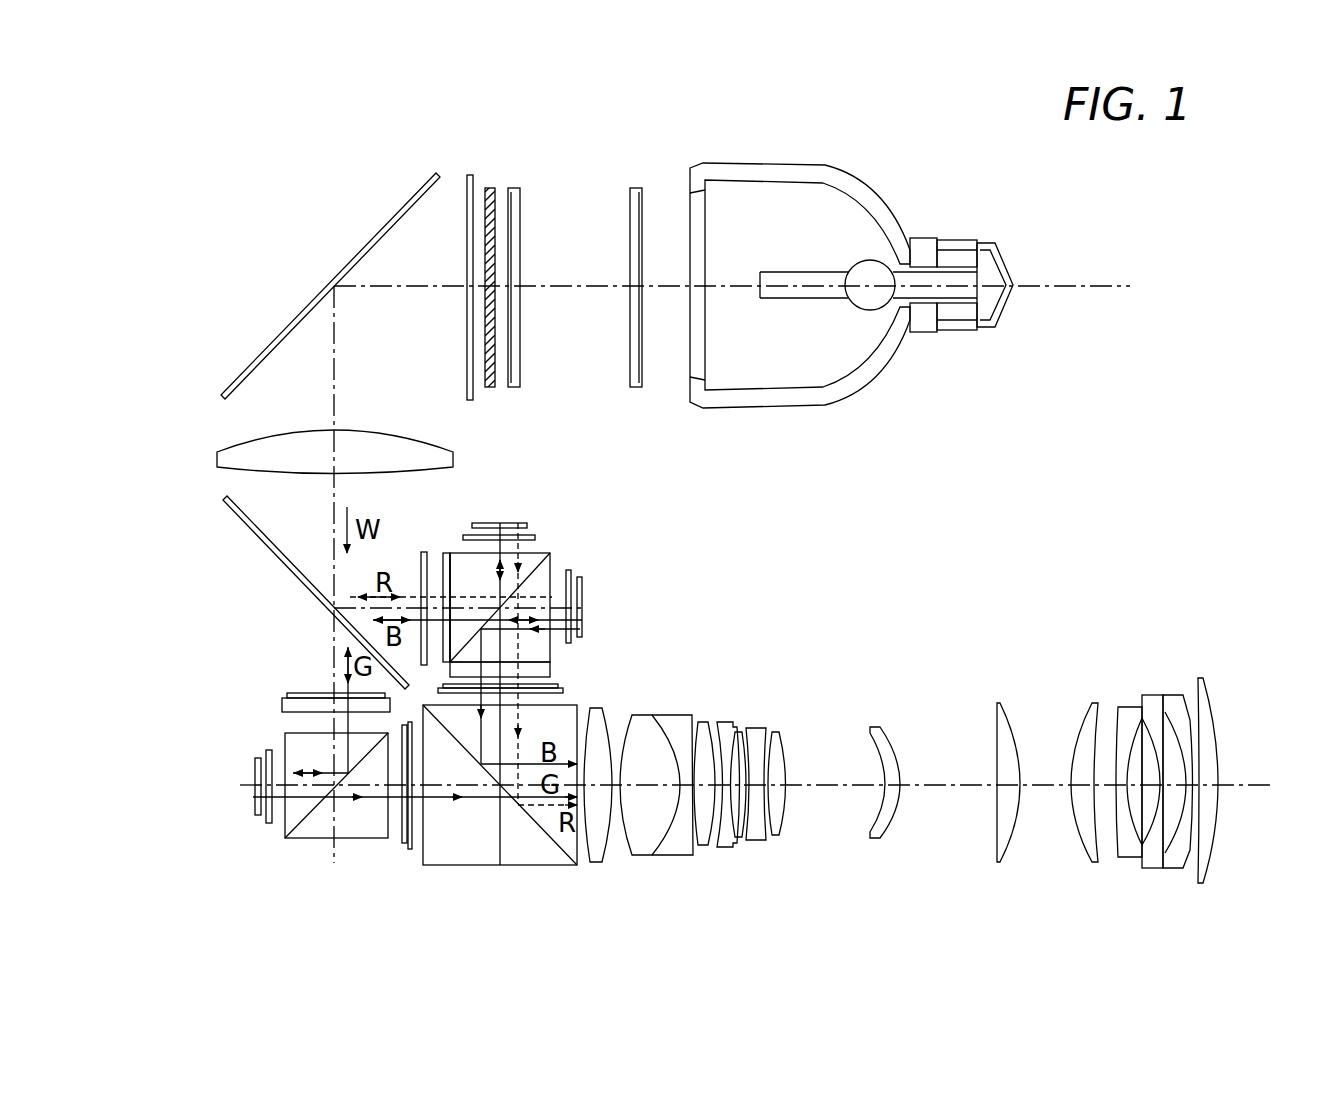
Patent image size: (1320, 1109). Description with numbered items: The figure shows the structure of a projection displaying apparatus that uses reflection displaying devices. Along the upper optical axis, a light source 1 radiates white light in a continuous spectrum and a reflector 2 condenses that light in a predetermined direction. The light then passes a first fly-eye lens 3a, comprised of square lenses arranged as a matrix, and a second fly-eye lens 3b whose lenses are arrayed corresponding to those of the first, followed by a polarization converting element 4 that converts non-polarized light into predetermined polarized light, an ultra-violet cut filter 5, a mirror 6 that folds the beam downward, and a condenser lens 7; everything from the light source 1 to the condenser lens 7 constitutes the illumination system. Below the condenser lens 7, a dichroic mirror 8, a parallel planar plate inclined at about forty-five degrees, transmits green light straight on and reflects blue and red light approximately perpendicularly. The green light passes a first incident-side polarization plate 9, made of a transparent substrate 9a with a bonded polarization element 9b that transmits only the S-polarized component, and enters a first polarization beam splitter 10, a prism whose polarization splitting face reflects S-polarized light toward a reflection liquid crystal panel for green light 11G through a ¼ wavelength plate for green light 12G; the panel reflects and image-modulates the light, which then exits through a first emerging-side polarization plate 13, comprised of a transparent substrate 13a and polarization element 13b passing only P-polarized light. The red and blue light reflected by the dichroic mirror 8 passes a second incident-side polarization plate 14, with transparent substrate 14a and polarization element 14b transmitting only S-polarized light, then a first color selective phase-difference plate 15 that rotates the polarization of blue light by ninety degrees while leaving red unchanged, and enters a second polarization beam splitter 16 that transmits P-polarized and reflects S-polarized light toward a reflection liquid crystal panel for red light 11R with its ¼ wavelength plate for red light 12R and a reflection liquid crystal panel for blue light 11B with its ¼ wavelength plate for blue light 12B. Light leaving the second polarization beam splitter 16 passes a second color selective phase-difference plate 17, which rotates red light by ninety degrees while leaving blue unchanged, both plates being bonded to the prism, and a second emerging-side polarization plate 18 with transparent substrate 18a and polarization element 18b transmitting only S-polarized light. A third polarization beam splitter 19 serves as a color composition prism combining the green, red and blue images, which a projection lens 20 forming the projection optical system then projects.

The light source 1 is at (833, 270).
The reflector 2 is at (780, 177).
The first fly-eye lens 3a is at (633, 190).
The second fly-eye lens 3b is at (515, 187).
The polarization converting element 4 is at (493, 190).
The ultra-violet cut filter 5 is at (472, 175).
The mirror 6 is at (347, 262).
The condenser lens 7 is at (237, 455).
The dichroic mirror 8 is at (245, 521).
The first incident-side polarization plate 9 is at (255, 659).
The transparent substrate 9a is at (282, 708).
The polarization element 9b is at (287, 695).
The first polarization beam splitter 10 is at (297, 742).
The reflection liquid crystal panel for green light 11G is at (255, 775).
The ¼ wavelength plate for green light 12G is at (264, 818).
The first emerging-side polarization plate 13 is at (408, 850).
The transparent substrate 13a is at (411, 850).
The polarization element 13b is at (402, 843).
The second incident-side polarization plate 14 is at (465, 551).
The transparent substrate 14a is at (445, 578).
The polarization element 14b is at (422, 558).
The first color selective phase-difference plate 15 is at (420, 570).
The second polarization beam splitter 16 is at (545, 567).
The second color selective phase-difference plate 17 is at (543, 670).
The second emerging-side polarization plate 18 is at (591, 681).
The transparent substrate 18a is at (565, 691).
The polarization element 18b is at (560, 686).
The reflection liquid crystal panel for red light 11R is at (528, 522).
The ¼ wavelength plate for red light 12R is at (535, 537).
The reflection liquid crystal panel for blue light 11B is at (582, 600).
The ¼ wavelength plate for blue light 12B is at (572, 573).
The third polarization beam splitter 19 is at (495, 847).
The projection lens 20 is at (590, 905).